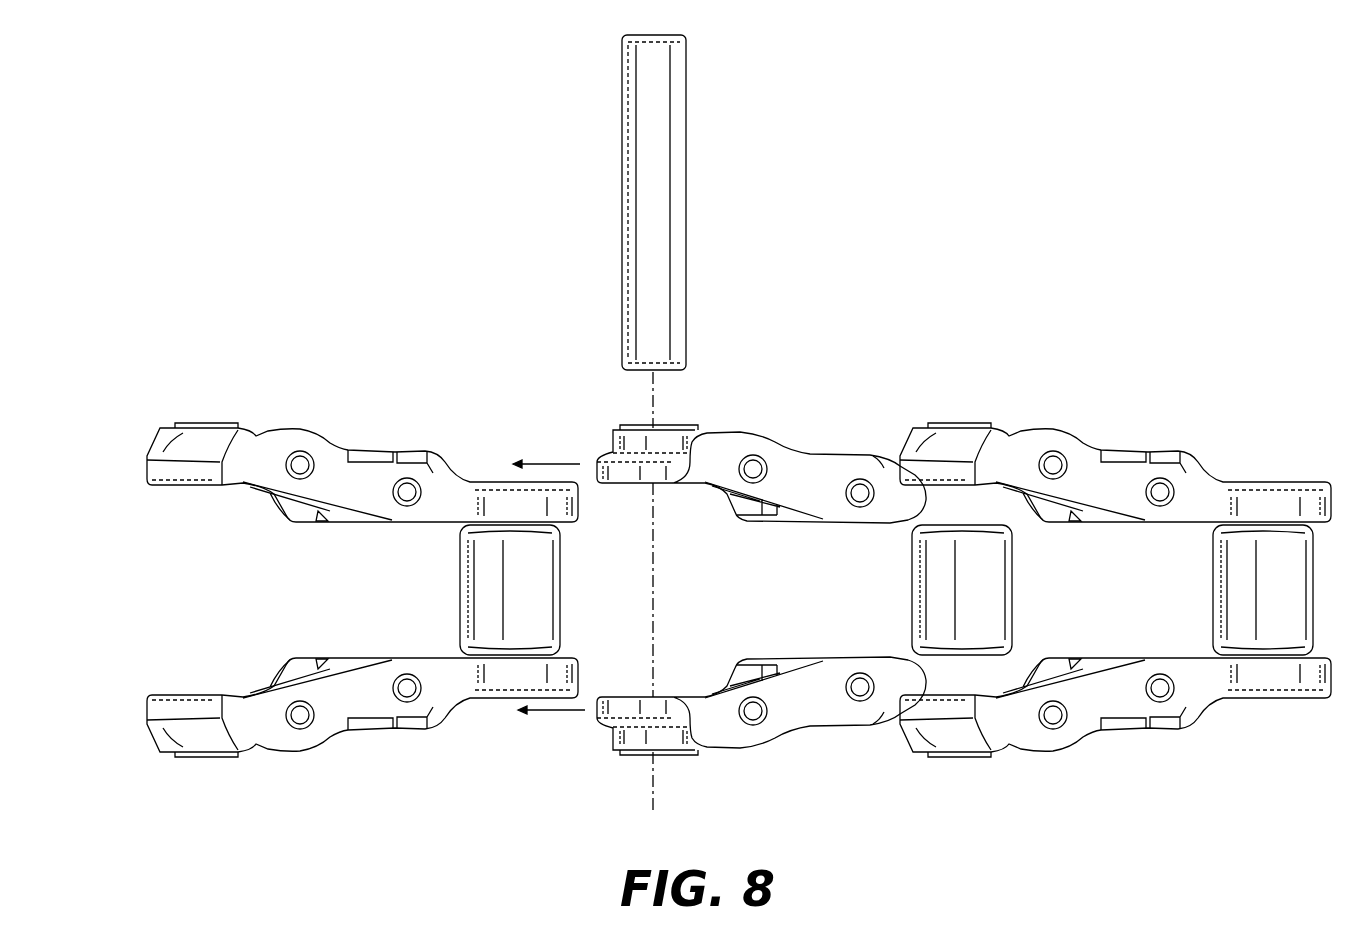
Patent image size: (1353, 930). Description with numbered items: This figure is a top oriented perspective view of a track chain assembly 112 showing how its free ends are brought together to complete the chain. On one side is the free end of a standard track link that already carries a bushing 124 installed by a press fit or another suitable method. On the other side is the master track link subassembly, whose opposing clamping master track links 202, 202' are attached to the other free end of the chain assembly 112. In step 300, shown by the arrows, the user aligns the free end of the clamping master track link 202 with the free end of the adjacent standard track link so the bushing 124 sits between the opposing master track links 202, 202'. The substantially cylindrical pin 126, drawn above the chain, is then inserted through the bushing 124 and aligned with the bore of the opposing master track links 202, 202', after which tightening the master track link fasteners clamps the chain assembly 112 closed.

The chain assembly 112 is at (964, 521).
The bushing 124 is at (485, 598).
The pin 126 is at (663, 234).
The clamping master track link 202 is at (761, 447).
The clamping master track link 202' is at (761, 664).
The step 300 is at (546, 774).